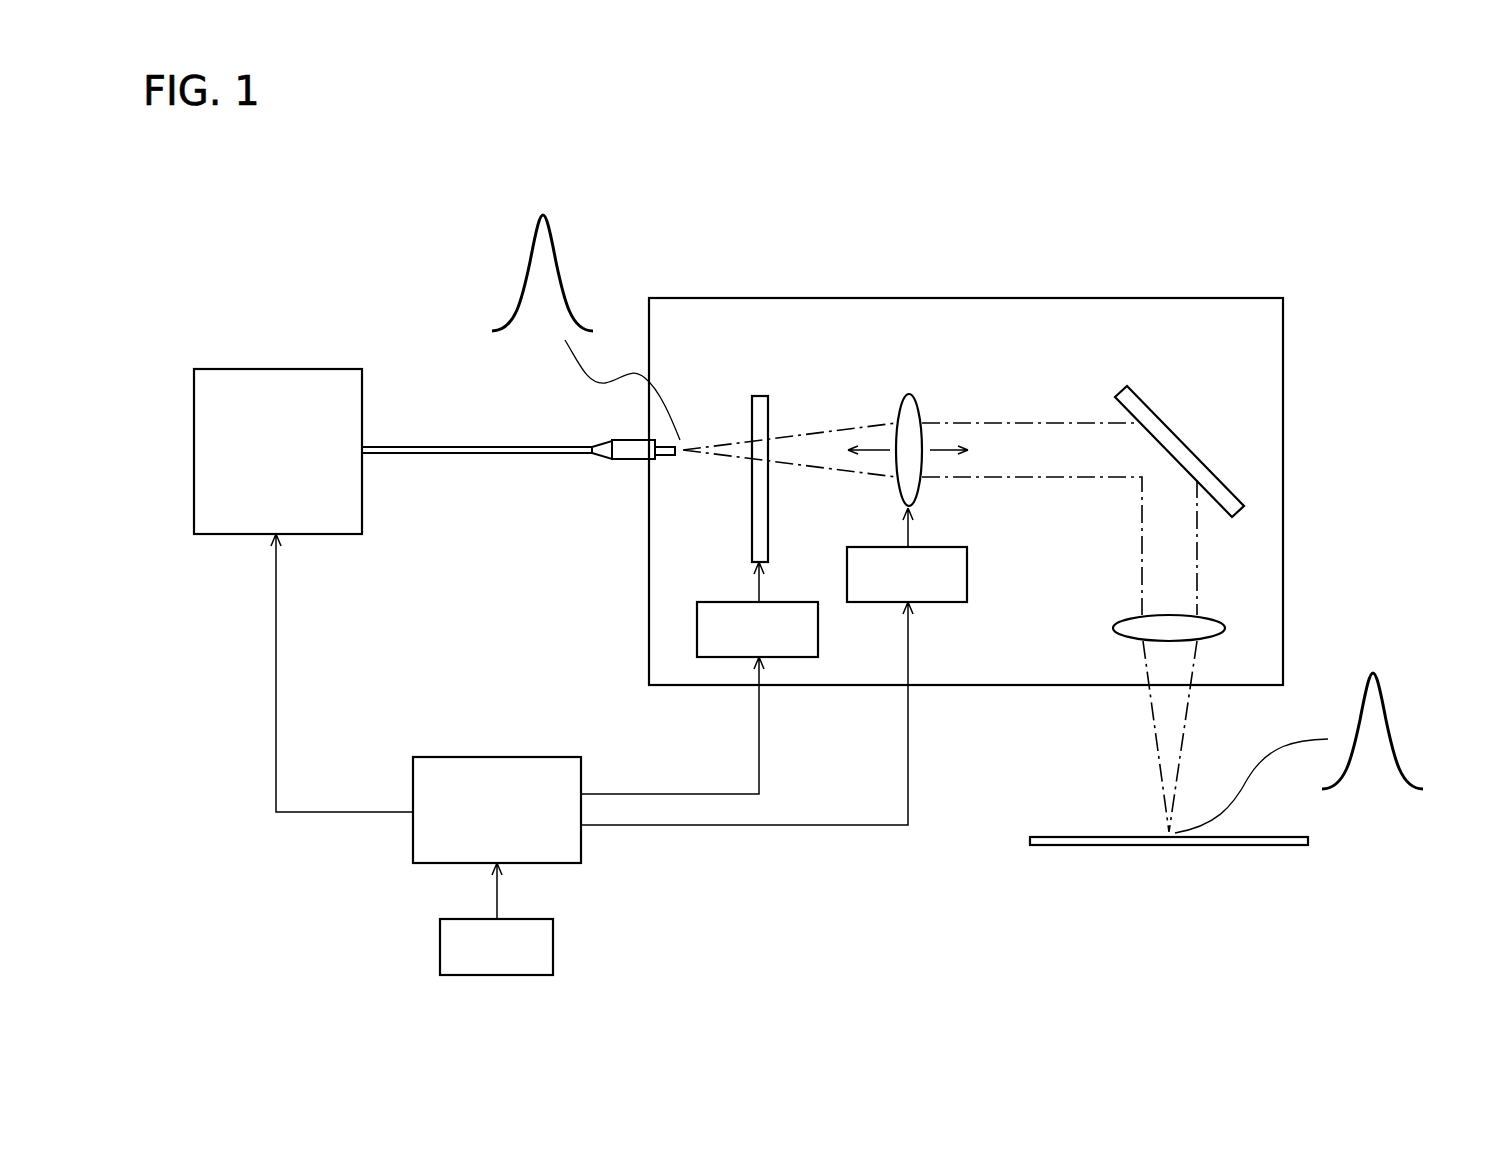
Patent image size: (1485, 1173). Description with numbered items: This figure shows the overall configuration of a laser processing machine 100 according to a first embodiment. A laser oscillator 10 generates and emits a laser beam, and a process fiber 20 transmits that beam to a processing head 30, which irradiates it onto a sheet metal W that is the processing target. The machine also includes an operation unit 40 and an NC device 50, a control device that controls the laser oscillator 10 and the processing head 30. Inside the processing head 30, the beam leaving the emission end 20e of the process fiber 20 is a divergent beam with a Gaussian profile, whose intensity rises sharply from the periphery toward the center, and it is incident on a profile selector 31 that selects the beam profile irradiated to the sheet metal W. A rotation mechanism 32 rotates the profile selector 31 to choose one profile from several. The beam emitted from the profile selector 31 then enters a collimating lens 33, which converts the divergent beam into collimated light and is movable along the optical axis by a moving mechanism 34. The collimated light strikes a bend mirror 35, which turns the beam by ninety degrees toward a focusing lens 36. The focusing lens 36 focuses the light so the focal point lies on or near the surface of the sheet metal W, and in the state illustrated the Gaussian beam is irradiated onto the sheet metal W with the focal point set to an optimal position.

The laser processing machine 100 is at (1066, 243).
The laser oscillator 10 is at (283, 369).
The process fiber 20 is at (538, 447).
The emission end 20e is at (677, 458).
The processing head 30 is at (1208, 298).
The profile selector 31 is at (760, 396).
The rotation mechanism 32 is at (818, 637).
The collimating lens 33 is at (912, 396).
The moving mechanism 34 is at (967, 580).
The bend mirror 35 is at (1151, 408).
The focusing lens 36 is at (1220, 617).
The operation unit 40 is at (553, 947).
The NC device 50 is at (501, 757).
The sheet metal W is at (1291, 837).